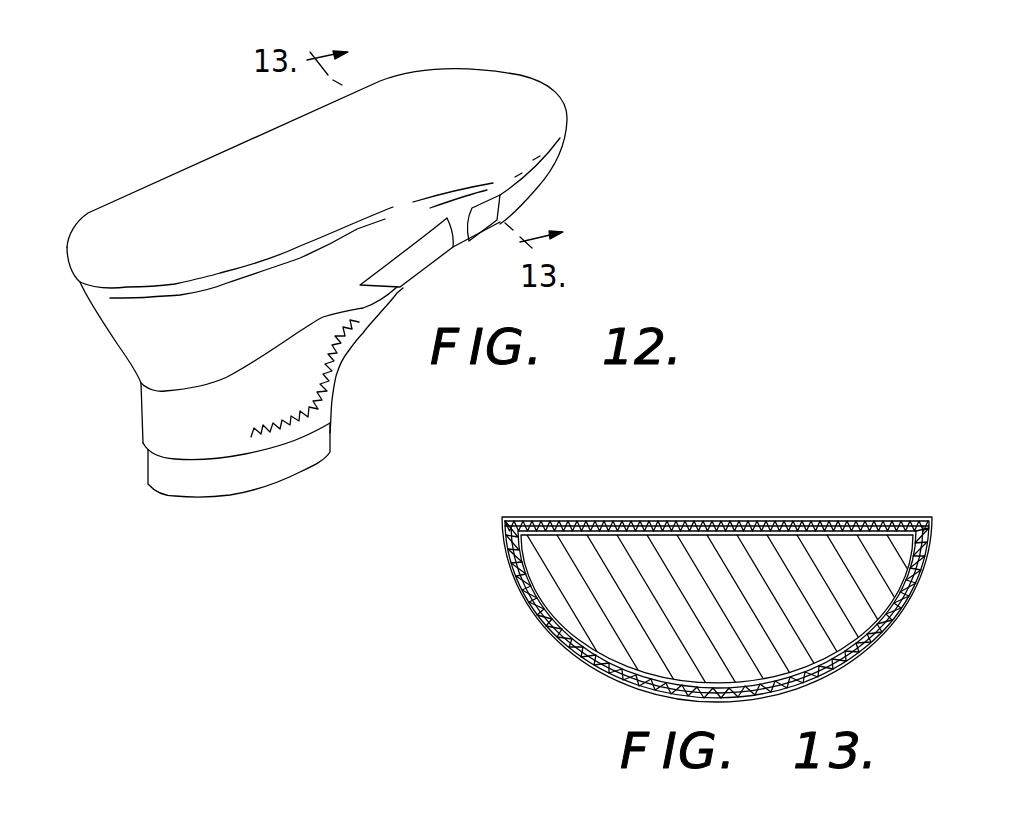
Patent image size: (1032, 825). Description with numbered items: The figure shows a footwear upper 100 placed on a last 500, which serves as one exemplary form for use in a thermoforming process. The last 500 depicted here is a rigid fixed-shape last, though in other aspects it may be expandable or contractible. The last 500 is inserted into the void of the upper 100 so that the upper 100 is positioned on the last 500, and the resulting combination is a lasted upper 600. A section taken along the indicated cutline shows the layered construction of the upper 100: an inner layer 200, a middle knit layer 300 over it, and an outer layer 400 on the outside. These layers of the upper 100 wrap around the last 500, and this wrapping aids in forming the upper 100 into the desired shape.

In FIG. 12, the upper 100 is at (170, 213).
In FIG. 13, the inner layer 200 is at (890, 540).
In FIG. 13, the middle knit layer 300 is at (895, 531).
In FIG. 13, the outer layer 400 is at (822, 517).
In FIG. 12, the last 500 is at (270, 460).
In FIG. 13, the last 500 is at (857, 598).
In FIG. 12, the lasted upper 600 is at (572, 181).